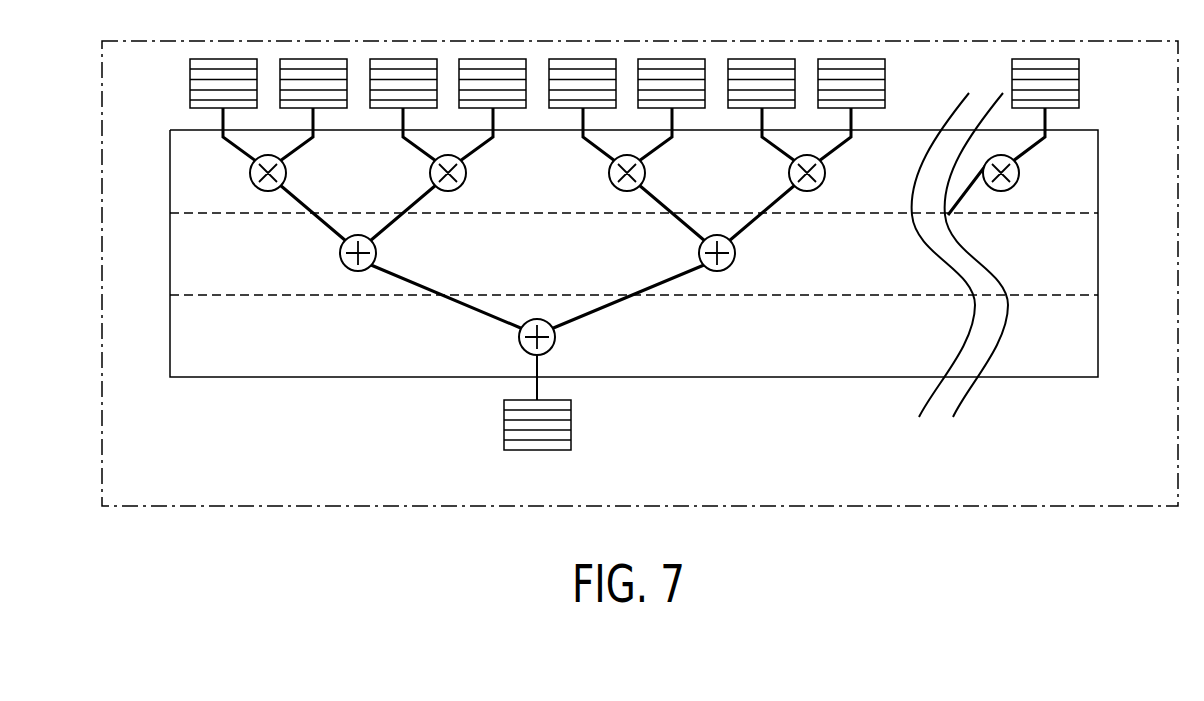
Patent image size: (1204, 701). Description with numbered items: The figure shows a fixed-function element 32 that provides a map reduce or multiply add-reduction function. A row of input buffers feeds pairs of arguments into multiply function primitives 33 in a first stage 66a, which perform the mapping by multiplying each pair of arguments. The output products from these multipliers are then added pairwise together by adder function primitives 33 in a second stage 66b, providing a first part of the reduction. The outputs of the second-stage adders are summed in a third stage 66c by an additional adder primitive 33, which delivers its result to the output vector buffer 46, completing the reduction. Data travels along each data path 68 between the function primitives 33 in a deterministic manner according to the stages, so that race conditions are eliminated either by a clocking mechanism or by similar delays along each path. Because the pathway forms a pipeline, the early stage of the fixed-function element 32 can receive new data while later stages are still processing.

The fixed-function element 32 is at (101, 70).
The function primitive 33 is at (340, 253).
The output vector buffer 46 is at (537, 451).
The first stage 66a is at (1098, 175).
The second stage 66b is at (1098, 255).
The third stage 66c is at (1098, 335).
The data path 68 is at (582, 317).